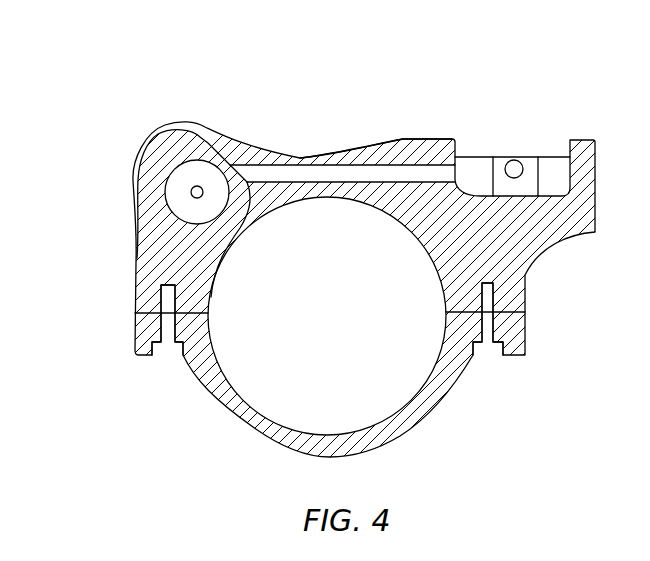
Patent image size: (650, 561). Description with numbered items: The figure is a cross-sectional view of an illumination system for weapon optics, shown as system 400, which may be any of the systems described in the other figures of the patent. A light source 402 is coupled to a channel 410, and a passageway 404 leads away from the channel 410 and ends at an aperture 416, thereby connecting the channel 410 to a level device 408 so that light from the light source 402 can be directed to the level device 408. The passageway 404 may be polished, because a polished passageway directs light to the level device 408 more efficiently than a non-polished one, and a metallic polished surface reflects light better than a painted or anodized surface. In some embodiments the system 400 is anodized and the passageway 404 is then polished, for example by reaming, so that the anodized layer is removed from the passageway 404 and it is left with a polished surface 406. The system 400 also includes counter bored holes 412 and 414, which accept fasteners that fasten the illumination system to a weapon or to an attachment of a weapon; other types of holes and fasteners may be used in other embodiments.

The system 400 is at (386, 72).
The light source 402 is at (203, 167).
The passageway 404 is at (307, 158).
The polished surface 406 is at (348, 156).
The level device 408 is at (508, 160).
The channel 410 is at (146, 175).
The counter bored hole 412 is at (168, 356).
The counter bored hole 414 is at (488, 353).
The aperture 416 is at (458, 173).